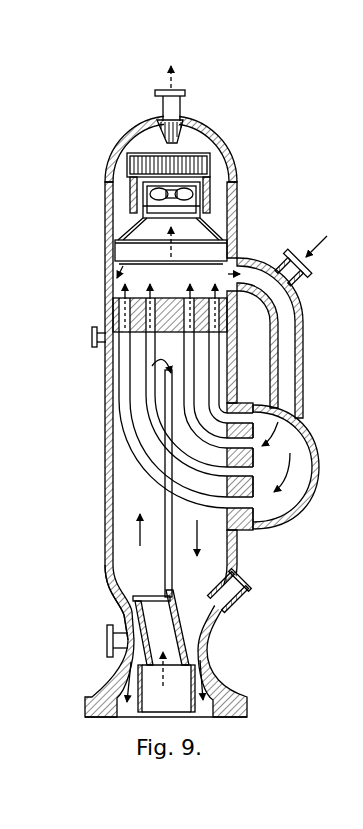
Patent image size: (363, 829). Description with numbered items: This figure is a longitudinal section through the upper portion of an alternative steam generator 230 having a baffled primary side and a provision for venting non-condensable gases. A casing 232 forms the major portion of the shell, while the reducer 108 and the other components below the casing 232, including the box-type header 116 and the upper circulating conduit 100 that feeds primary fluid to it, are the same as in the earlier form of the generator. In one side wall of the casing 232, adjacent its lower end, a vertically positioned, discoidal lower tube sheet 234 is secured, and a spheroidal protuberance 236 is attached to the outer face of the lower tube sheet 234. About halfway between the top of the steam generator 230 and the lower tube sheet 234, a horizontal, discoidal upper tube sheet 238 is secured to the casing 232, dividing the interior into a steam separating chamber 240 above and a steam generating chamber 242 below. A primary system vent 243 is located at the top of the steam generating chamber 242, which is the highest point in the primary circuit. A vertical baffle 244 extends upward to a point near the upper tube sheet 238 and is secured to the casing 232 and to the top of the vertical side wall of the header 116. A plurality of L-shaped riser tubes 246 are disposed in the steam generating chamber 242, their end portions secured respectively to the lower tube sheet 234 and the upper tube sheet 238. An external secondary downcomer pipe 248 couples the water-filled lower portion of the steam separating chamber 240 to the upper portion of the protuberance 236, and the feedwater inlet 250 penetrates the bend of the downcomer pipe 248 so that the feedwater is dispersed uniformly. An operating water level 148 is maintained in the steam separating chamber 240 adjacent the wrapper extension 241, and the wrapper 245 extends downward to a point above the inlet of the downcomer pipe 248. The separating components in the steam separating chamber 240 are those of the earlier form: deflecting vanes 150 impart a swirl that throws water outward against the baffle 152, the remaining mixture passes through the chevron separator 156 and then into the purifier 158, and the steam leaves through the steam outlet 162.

The upper circulating conduit 100 is at (184, 651).
The reducing portion 108 is at (109, 593).
The box-type header 116 is at (129, 596).
The operating water level 148 is at (205, 202).
The deflecting vanes 150 is at (143, 206).
The baffle 152 is at (211, 188).
The chevron separator 156 is at (129, 165).
The purifier 158 is at (178, 127).
The steam outlet 162 is at (181, 101).
The steam generator 230 is at (109, 394).
The casing 232 is at (110, 424).
The lower tube sheet 234 is at (238, 533).
The spheroidal protuberance 236 is at (320, 463).
The upper tube sheet 238 is at (108, 313).
The steam separating chamber 240 is at (281, 152).
The wrapper extension 241 is at (137, 191).
The steam generating chamber 242 is at (184, 351).
The primary system vent 243 is at (100, 347).
The vertical baffle 244 is at (173, 540).
The wrapper 245 is at (118, 244).
The L-shaped riser tubes 246 is at (274, 457).
The external secondary downcomer pipe 248 is at (304, 343).
The feedwater inlet 250 is at (297, 281).